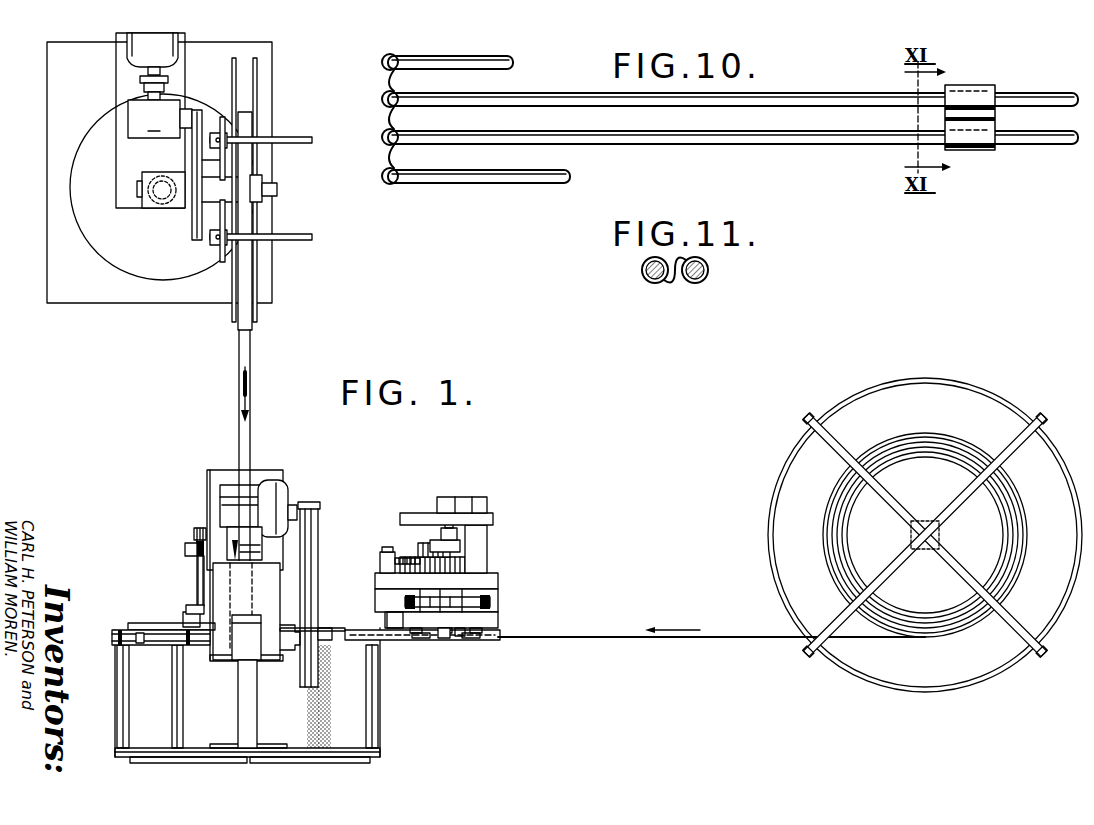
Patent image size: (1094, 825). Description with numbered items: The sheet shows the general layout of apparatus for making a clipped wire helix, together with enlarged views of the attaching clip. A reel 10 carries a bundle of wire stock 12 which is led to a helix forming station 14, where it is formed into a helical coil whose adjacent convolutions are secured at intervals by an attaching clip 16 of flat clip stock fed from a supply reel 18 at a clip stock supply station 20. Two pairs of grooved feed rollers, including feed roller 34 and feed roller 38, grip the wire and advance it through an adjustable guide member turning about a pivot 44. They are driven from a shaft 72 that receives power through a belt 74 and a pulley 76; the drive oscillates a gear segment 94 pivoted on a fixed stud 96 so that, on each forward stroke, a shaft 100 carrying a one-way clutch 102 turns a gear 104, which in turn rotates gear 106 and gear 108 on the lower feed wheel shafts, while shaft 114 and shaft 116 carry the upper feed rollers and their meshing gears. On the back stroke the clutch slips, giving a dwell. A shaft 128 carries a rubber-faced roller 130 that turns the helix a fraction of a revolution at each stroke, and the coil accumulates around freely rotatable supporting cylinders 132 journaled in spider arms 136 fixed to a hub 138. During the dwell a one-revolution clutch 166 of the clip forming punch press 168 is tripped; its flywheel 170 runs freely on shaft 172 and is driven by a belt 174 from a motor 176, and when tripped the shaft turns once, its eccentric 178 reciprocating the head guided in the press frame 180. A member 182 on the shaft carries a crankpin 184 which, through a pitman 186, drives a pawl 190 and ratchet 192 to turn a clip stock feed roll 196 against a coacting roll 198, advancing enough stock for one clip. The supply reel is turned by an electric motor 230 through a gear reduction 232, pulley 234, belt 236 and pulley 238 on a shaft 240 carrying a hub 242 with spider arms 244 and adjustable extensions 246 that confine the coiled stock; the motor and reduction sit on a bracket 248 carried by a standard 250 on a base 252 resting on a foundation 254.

In FIG. 1, the reel 10 is at (868, 392).
In FIG. 1, the wire stock 12 is at (570, 639).
In FIG. 1, the helix forming station 14 is at (200, 766).
In FIG. 1, the attaching clip 16 is at (140, 645).
In FIG. 10, the attaching clip 16 is at (398, 107).
In FIG. 11, the attaching clip 16 is at (680, 279).
In FIG. 1, the supply reel 18 is at (253, 160).
In FIG. 1, the clip stock supply station 20 is at (72, 232).
In FIG. 1, the grooved feed roller 34 is at (460, 640).
In FIG. 1, the grooved feed roller 38 is at (440, 640).
In FIG. 1, the pivot 44 is at (349, 630).
In FIG. 1, the shaft 72 is at (472, 531).
In FIG. 1, the belt 74 is at (425, 513).
In FIG. 1, the pulley 76 is at (488, 506).
In FIG. 1, the gear segment 94 is at (424, 560).
In FIG. 1, the fixed stud 96 is at (388, 550).
In FIG. 1, the shaft 100 is at (447, 528).
In FIG. 1, the one-way clutch 102 is at (461, 548).
In FIG. 1, the gear 104 is at (470, 600).
In FIG. 1, the gear 106 is at (492, 601).
In FIG. 1, the gear 108 is at (405, 603).
In FIG. 1, the shaft 114 is at (470, 640).
In FIG. 1, the shaft 116 is at (418, 640).
In FIG. 1, the shaft 128 is at (300, 764).
In FIG. 1, the roller 130 is at (331, 705).
In FIG. 1, the supporting cylinder 132 is at (129, 704).
In FIG. 1, the spider arm 136 is at (233, 764).
In FIG. 1, the hub 138 is at (238, 704).
In FIG. 1, the one-revolution clutch 166 is at (297, 652).
In FIG. 1, the clip forming punch press 168 is at (305, 466).
In FIG. 1, the flywheel 170 is at (343, 580).
In FIG. 1, the shaft 172 is at (330, 645).
In FIG. 1, the belt 174 is at (306, 530).
In FIG. 1, the motor 176 is at (289, 497).
In FIG. 1, the cam or eccentric 178 is at (236, 656).
In FIG. 1, the frame 180 is at (215, 588).
In FIG. 1, the member 182 is at (186, 609).
In FIG. 1, the crankpin 184 is at (186, 548).
In FIG. 1, the pitman 186 is at (198, 572).
In FIG. 1, the pawl 190 is at (195, 534).
In FIG. 1, the ratchet 192 is at (200, 528).
In FIG. 1, the clip stock feed roll 196 is at (233, 500).
In FIG. 1, the coacting roll 198 is at (234, 545).
In FIG. 1, the electric motor 230 is at (126, 46).
In FIG. 1, the gear reduction 232 is at (154, 119).
In FIG. 1, the pulley 234 is at (198, 112).
In FIG. 1, the belt 236 is at (193, 132).
In FIG. 1, the pulley 238 is at (196, 236).
In FIG. 1, the shaft 240 is at (278, 189).
In FIG. 1, the hub 242 is at (262, 200).
In FIG. 1, the spider arm 244 is at (255, 140).
In FIG. 1, the adjustable extension 246 is at (238, 72).
In FIG. 1, the bracket 248 is at (116, 100).
In FIG. 1, the standard 250 is at (152, 209).
In FIG. 1, the base 252 is at (128, 266).
In FIG. 1, the foundation 254 is at (80, 304).